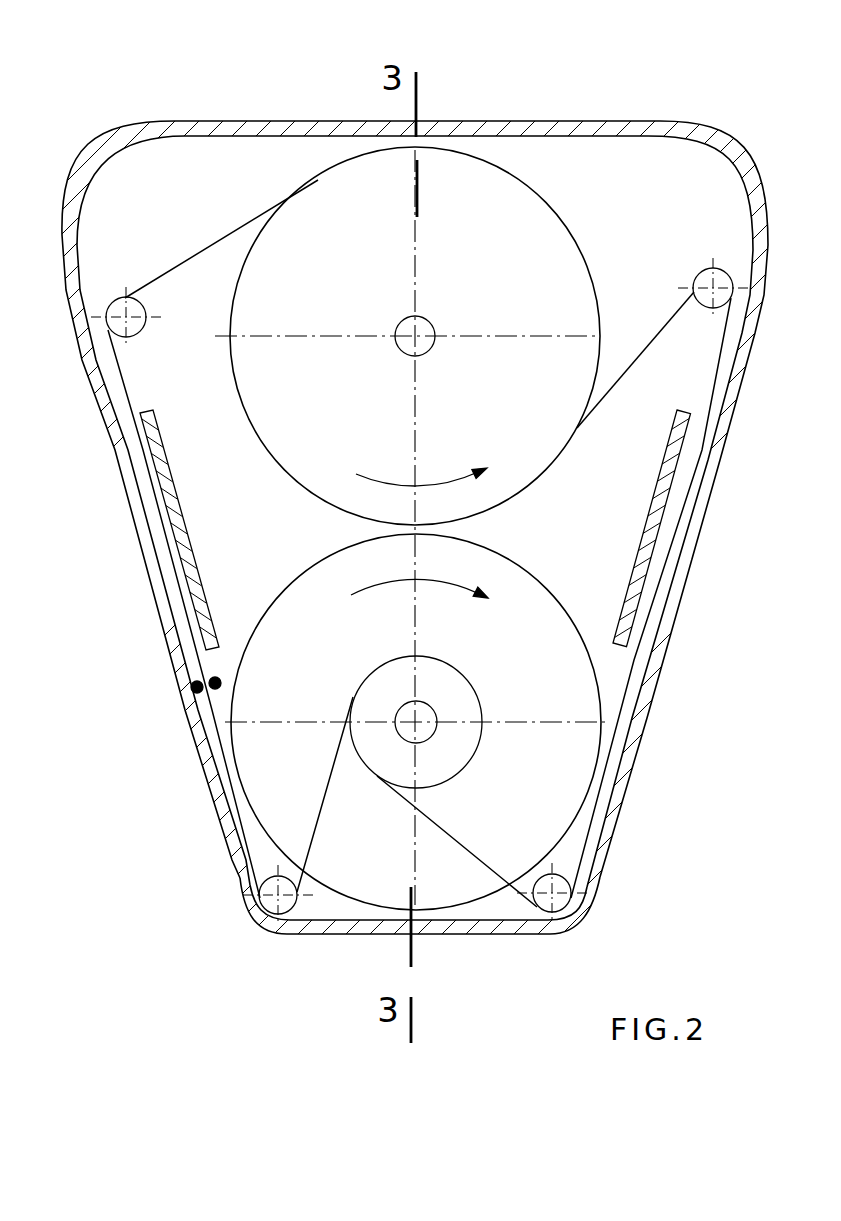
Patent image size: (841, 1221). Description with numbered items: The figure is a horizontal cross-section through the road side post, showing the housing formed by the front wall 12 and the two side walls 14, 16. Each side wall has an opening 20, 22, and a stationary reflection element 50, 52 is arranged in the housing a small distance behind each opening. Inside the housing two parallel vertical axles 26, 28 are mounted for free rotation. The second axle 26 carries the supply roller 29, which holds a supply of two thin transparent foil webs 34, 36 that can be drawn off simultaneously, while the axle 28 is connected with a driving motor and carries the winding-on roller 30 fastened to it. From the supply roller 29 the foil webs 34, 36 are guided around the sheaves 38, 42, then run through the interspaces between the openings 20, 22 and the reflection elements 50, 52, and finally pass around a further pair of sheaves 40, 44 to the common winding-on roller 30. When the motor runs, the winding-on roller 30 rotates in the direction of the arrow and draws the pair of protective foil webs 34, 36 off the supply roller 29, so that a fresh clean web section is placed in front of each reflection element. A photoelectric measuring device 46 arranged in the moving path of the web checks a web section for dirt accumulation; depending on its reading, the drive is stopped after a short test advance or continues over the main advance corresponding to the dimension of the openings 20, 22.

The front wall 12 is at (460, 927).
The side wall 14 is at (650, 690).
The side wall 16 is at (187, 712).
The opening 20 is at (700, 513).
The opening 22 is at (162, 578).
The second axle 26 is at (431, 320).
The axle 28 is at (433, 712).
The supply roller 29 is at (311, 415).
The winding-on roller 30 is at (356, 639).
The foil web 34 is at (180, 264).
The foil web 36 is at (638, 360).
The sheave 38 is at (137, 327).
The sheave 40 is at (282, 934).
The sheave 42 is at (705, 278).
The lower right pulley 44 is at (558, 887).
The photoelectric measuring device 46 is at (192, 688).
The reflection element 50 is at (643, 537).
The reflection element 52 is at (185, 533).